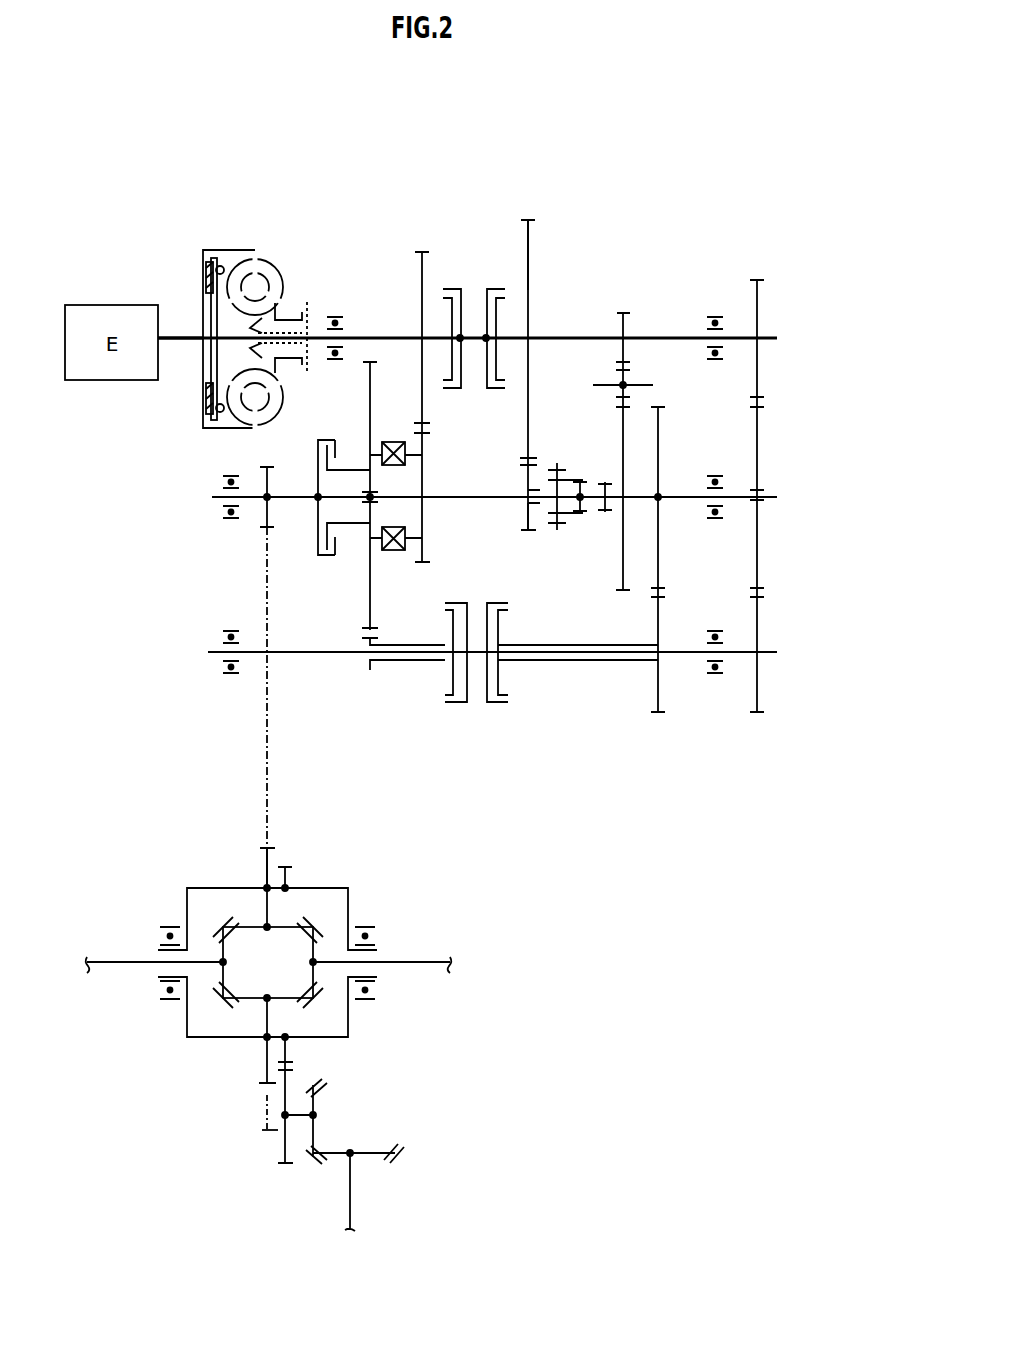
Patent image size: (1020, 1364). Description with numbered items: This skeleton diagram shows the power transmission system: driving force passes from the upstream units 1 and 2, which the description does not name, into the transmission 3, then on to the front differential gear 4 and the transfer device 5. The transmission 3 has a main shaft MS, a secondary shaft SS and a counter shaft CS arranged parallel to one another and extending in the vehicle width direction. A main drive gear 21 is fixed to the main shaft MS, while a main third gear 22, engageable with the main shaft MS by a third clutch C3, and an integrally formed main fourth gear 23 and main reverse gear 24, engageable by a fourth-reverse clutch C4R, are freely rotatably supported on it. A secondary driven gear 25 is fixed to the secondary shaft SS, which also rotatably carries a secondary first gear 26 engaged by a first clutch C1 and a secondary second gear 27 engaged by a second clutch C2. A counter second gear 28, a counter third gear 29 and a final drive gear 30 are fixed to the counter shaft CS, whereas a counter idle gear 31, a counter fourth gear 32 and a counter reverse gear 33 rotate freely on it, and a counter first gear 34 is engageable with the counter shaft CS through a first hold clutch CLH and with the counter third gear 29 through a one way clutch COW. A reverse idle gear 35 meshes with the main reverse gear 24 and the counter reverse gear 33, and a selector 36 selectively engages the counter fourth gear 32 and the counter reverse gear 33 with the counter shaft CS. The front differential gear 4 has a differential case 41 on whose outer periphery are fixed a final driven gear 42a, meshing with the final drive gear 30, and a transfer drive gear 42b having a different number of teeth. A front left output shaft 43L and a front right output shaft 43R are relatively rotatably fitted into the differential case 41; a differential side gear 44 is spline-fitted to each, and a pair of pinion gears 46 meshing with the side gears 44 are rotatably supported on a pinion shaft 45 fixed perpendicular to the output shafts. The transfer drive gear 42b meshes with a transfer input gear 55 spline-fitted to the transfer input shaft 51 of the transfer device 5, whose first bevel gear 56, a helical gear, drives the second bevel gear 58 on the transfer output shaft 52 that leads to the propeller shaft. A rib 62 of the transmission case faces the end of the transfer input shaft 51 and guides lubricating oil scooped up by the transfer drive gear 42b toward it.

The engine output shaft 1 is at (182, 343).
The torque converter 2 is at (290, 265).
The transmission 3 is at (563, 287).
The front differential gear 4 is at (270, 938).
The transfer device 5 is at (305, 1126).
The main drive gear 21 is at (762, 278).
The main third gear 22 is at (418, 252).
The main fourth gear 23 is at (533, 220).
The main reverse gear 24 is at (626, 313).
The secondary driven gear 25 is at (757, 713).
The secondary first gear 26 is at (370, 670).
The secondary second gear 27 is at (657, 713).
The counter second gear 28 is at (662, 408).
The counter third gear 29 is at (427, 563).
The final drive gear 30 is at (270, 467).
The counter idle gear 31 is at (762, 407).
The counter fourth gear 32 is at (528, 531).
The counter reverse gear 33 is at (622, 591).
The counter first gear 34 is at (373, 363).
The reverse idle gear 35 is at (627, 384).
The selector 36 is at (556, 465).
The differential case 41 is at (330, 888).
The final driven gear 42a is at (266, 847).
The transfer drive gear 42b is at (288, 866).
The front left output shaft 43L is at (113, 963).
The front right output shaft 43R is at (392, 963).
The differential side gear 44 is at (327, 925).
The pinion shaft 45 is at (271, 905).
The pinion gear 46 is at (224, 926).
The transfer input shaft 51 is at (307, 1123).
The transfer output shaft 52 is at (353, 1187).
The transfer input gear 55 is at (283, 1164).
The first bevel gear 56 is at (318, 1090).
The second bevel gear 58 is at (390, 1148).
The rib 62 is at (263, 1130).
The main shaft MS is at (645, 337).
The counter shaft CS is at (487, 496).
The secondary shaft SS is at (290, 655).
The one way clutch COW is at (382, 445).
The first hold clutch CLH is at (327, 564).
The first clutch C1 is at (454, 707).
The second clutch C2 is at (499, 707).
The third clutch C3 is at (452, 283).
The fourth-reverse clutch C4R is at (491, 283).